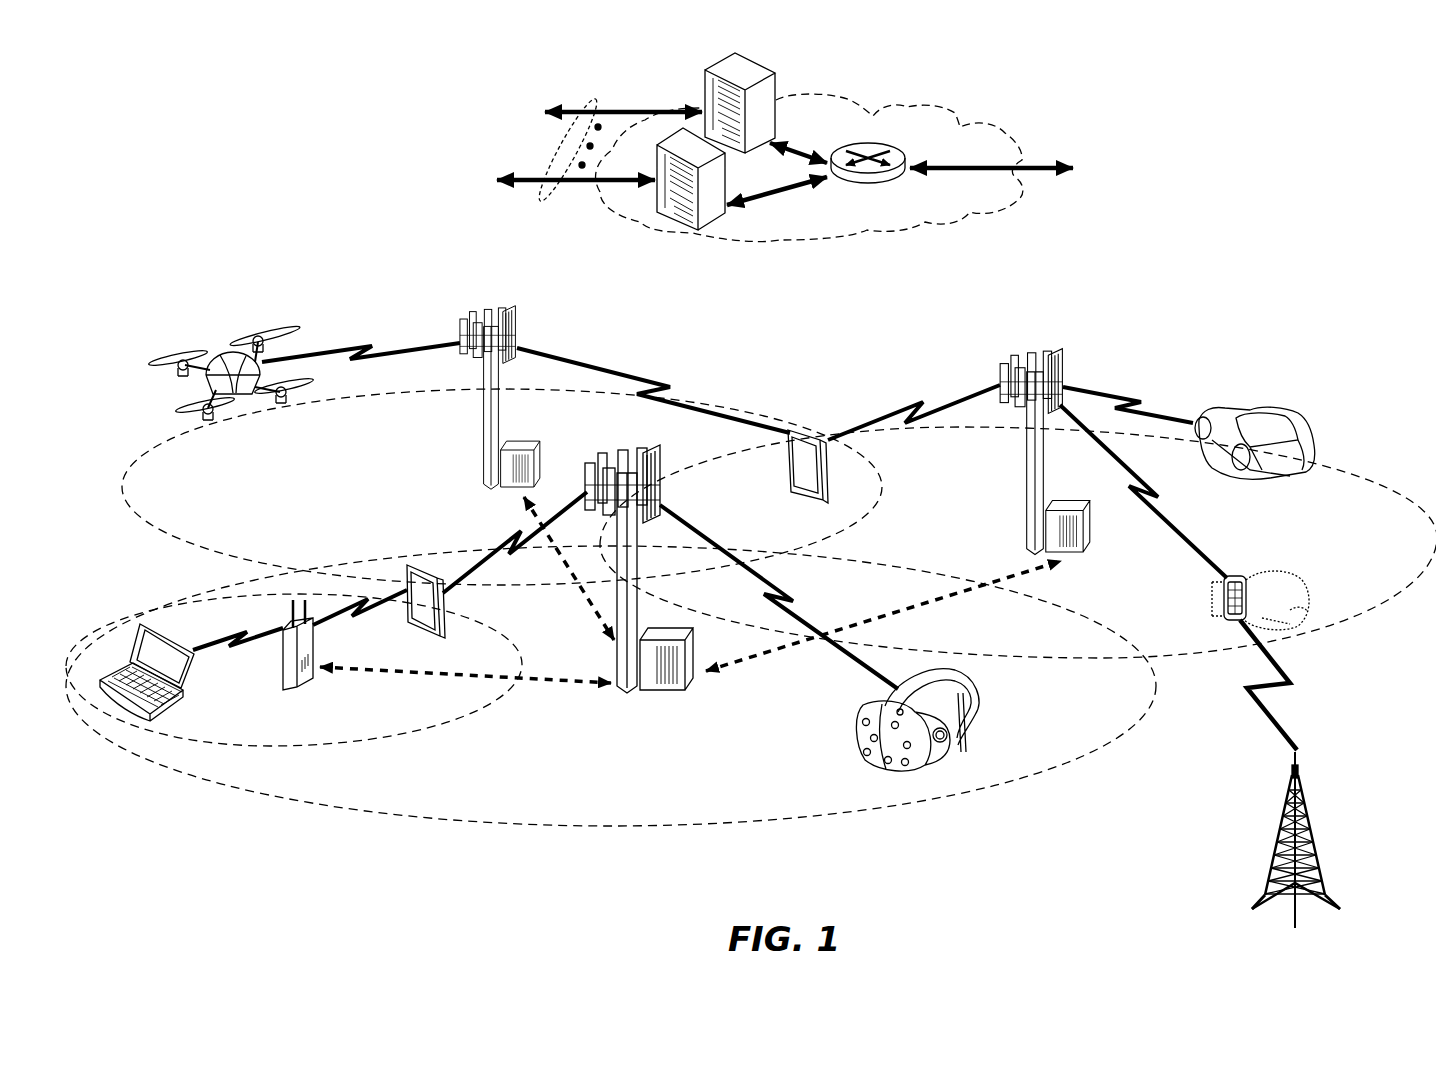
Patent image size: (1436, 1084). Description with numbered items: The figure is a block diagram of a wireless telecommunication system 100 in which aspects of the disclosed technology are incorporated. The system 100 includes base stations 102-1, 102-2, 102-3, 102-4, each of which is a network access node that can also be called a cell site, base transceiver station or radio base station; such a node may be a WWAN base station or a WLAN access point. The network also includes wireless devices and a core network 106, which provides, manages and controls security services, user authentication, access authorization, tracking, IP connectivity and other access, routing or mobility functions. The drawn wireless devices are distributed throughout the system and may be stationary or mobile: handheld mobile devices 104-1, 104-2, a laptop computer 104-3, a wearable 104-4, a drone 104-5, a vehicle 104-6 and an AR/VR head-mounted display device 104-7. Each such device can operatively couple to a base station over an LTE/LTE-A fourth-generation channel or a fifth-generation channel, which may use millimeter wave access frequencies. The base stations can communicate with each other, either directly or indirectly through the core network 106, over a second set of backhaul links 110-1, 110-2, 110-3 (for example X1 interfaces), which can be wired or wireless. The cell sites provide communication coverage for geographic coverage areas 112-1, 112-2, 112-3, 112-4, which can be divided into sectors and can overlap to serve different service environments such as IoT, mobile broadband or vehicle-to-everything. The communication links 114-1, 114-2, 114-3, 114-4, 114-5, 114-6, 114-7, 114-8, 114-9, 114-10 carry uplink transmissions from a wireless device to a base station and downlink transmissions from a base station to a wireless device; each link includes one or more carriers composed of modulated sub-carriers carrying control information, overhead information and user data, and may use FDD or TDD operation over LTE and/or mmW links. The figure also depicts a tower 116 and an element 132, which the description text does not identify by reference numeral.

The wireless telecommunication system 100 is at (1333, 158).
The base station 102-1 is at (627, 694).
The base station 102-2 is at (483, 432).
The base station 102-3 is at (1027, 468).
The base station 102-4 is at (282, 673).
The wireless device 104-1 is at (445, 612).
The wireless device 104-2 is at (787, 468).
The wireless device 104-3 is at (124, 716).
The wireless device 104-4 is at (1234, 577).
The wireless device 104-5 is at (242, 398).
The wireless device 104-6 is at (1276, 420).
The wireless device 104-7 is at (979, 704).
The core network 106 is at (903, 239).
The backhaul link 110-1 is at (358, 670).
The backhaul link 110-2 is at (945, 596).
The backhaul link 110-3 is at (590, 593).
The geographic coverage area 112-1 is at (545, 829).
The geographic coverage area 112-2 is at (423, 735).
The geographic coverage area 112-3 is at (190, 542).
The geographic coverage area 112-4 is at (1343, 462).
The communication link 114-1 is at (798, 590).
The communication link 114-2 is at (511, 553).
The communication link 114-3 is at (201, 651).
The communication link 114-4 is at (352, 613).
The communication link 114-5 is at (362, 348).
The communication link 114-6 is at (662, 377).
The communication link 114-7 is at (914, 407).
The communication link 114-8 is at (1160, 510).
The communication link 114-9 is at (1123, 394).
The communication link 114-10 is at (1276, 686).
The radio tower 116 is at (1313, 820).
The external network connection 132 is at (560, 194).